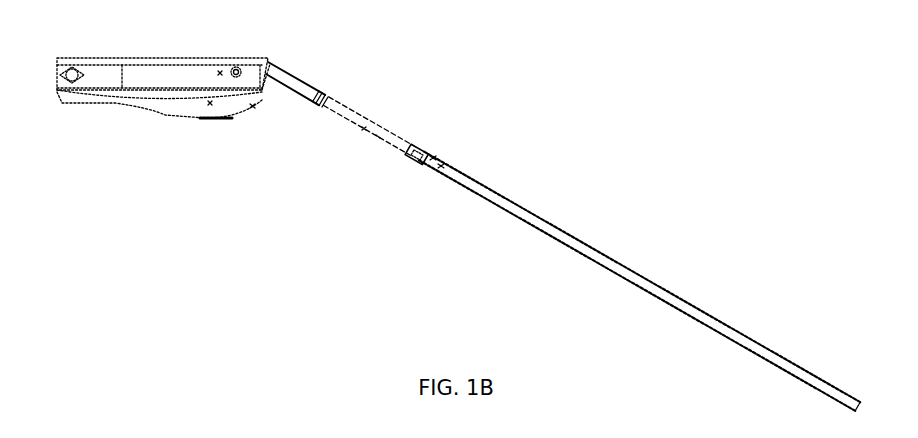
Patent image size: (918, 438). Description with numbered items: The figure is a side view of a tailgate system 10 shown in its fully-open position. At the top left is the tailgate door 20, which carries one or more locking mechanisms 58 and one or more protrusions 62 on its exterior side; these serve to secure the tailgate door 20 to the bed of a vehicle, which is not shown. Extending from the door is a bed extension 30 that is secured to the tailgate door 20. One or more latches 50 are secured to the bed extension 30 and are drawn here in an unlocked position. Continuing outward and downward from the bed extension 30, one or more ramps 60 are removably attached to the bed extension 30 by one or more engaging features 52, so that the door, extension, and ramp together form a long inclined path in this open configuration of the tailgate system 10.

The tailgate system 10 is at (552, 110).
The tailgate door 20 is at (172, 82).
The bed extension 30 is at (293, 86).
The latch 50 is at (358, 126).
The engaging feature 52 is at (415, 147).
The locking mechanism 58 is at (238, 76).
The ramp 60 is at (650, 282).
The protrusion 62 is at (76, 80).